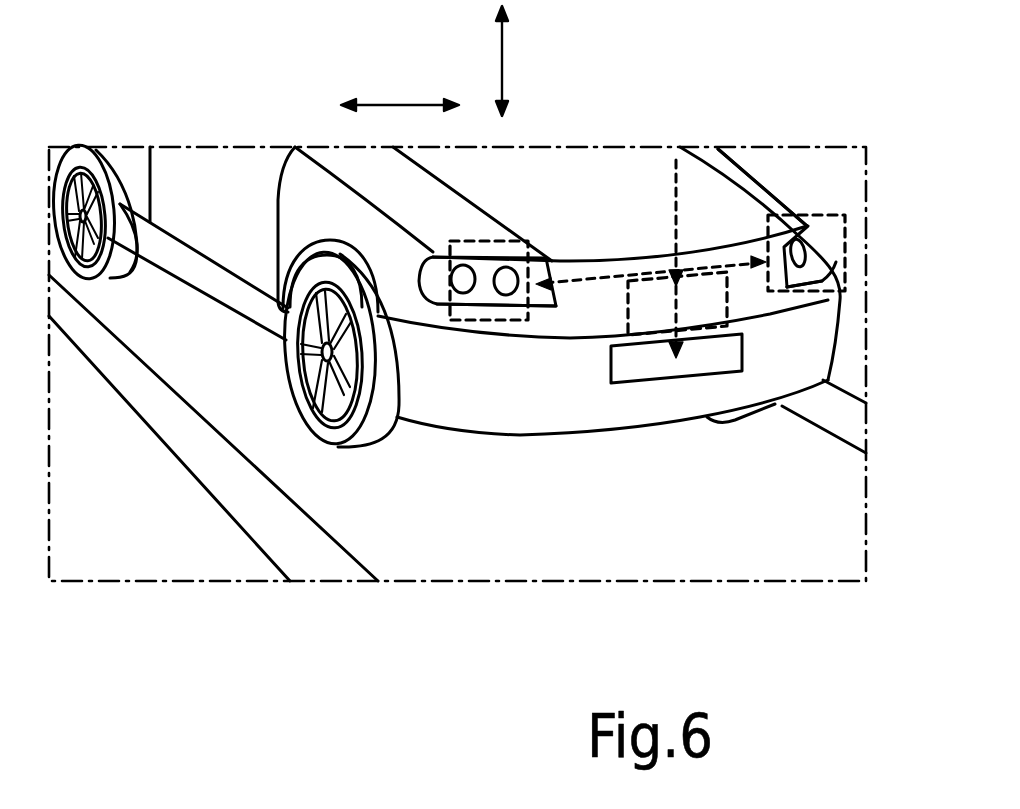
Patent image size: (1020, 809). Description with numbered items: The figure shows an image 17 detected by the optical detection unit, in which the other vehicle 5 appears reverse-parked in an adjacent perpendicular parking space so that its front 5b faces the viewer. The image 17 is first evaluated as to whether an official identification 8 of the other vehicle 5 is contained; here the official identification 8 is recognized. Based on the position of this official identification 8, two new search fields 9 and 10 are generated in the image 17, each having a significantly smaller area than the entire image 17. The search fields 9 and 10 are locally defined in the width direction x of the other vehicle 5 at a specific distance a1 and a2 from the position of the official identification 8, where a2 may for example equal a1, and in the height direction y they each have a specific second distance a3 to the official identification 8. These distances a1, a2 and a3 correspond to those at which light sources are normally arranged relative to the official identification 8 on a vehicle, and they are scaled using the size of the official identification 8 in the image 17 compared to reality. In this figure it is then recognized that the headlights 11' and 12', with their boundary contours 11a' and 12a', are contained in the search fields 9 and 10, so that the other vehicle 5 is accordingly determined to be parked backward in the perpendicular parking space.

The other vehicle 5 is at (574, 178).
The front 5b is at (720, 144).
The official identification 8 is at (647, 372).
The search field 9 is at (518, 240).
The search field 10 is at (825, 214).
The headlight 11' is at (452, 263).
The boundary contour 11a' is at (478, 355).
The headlight 12' is at (856, 250).
The boundary contour 12a' is at (868, 285).
The image 17 is at (705, 522).
The distance a1 is at (600, 278).
The distance a2 is at (705, 268).
The second distance a3 is at (673, 298).
The width direction x is at (401, 105).
The height direction y is at (505, 60).